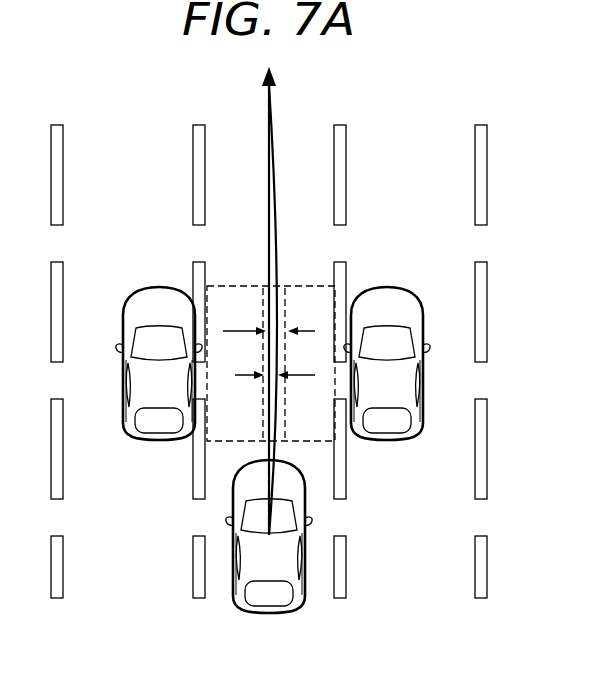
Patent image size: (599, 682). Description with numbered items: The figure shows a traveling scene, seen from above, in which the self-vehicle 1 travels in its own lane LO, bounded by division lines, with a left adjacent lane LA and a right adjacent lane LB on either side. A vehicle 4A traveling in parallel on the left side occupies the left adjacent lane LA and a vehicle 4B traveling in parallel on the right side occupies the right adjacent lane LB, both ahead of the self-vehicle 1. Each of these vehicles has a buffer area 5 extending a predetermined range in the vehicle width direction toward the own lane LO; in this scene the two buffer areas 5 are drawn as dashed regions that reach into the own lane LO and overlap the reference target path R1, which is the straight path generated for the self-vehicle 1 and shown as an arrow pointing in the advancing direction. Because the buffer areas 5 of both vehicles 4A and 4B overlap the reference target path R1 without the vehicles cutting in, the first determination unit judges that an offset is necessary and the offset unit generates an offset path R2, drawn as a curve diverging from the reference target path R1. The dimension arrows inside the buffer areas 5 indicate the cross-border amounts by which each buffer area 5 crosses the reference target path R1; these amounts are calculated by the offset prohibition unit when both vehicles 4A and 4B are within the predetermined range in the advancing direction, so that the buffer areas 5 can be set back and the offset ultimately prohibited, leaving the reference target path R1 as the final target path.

The self-vehicle 1 is at (278, 614).
The vehicle traveling in parallel on the left side 4A is at (162, 287).
The vehicle traveling in parallel on the right side 4B is at (386, 287).
The buffer area 5 is at (236, 285).
The left adjacent lane LA is at (134, 133).
The own lane LO is at (233, 133).
The right adjacent lane LB is at (410, 133).
The reference target path R1 is at (268, 181).
The offset path R2 is at (274, 215).